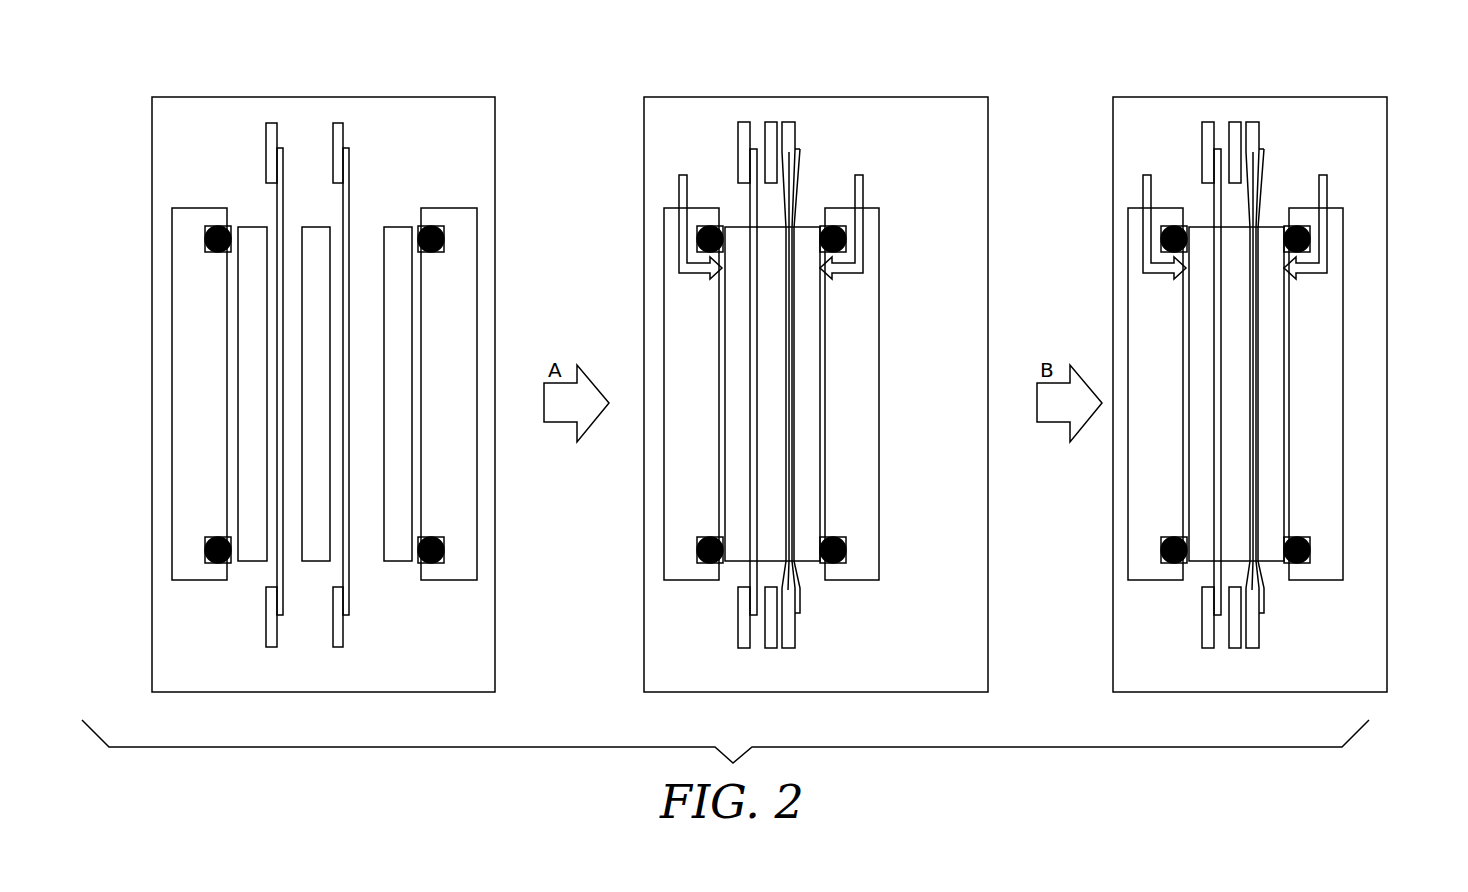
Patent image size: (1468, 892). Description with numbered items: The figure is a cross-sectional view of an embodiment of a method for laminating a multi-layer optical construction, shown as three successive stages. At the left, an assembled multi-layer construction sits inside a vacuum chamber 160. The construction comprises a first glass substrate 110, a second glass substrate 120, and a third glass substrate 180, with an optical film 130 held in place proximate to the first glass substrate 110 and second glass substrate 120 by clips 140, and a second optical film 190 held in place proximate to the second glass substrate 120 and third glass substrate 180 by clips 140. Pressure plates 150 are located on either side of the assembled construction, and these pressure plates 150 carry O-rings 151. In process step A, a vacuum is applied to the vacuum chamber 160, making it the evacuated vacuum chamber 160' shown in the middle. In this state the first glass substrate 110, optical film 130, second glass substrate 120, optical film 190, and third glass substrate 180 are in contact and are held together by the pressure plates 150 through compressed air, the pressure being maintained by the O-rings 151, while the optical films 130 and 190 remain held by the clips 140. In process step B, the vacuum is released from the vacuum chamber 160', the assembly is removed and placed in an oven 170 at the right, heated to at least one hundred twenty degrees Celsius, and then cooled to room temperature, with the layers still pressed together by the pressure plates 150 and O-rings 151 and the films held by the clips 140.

The first glass substrate 110 is at (252, 561).
The second glass substrate 120 is at (316, 561).
The optical film 130 is at (277, 203).
The clips 140 is at (266, 135).
The pressure plates 150 is at (190, 403).
The O-rings 151 is at (205, 242).
The vacuum chamber 160 is at (366, 394).
The vacuum chamber 160' is at (856, 394).
The oven 170 is at (1347, 663).
The third glass substrate 180 is at (400, 561).
The optical film 190 is at (343, 204).